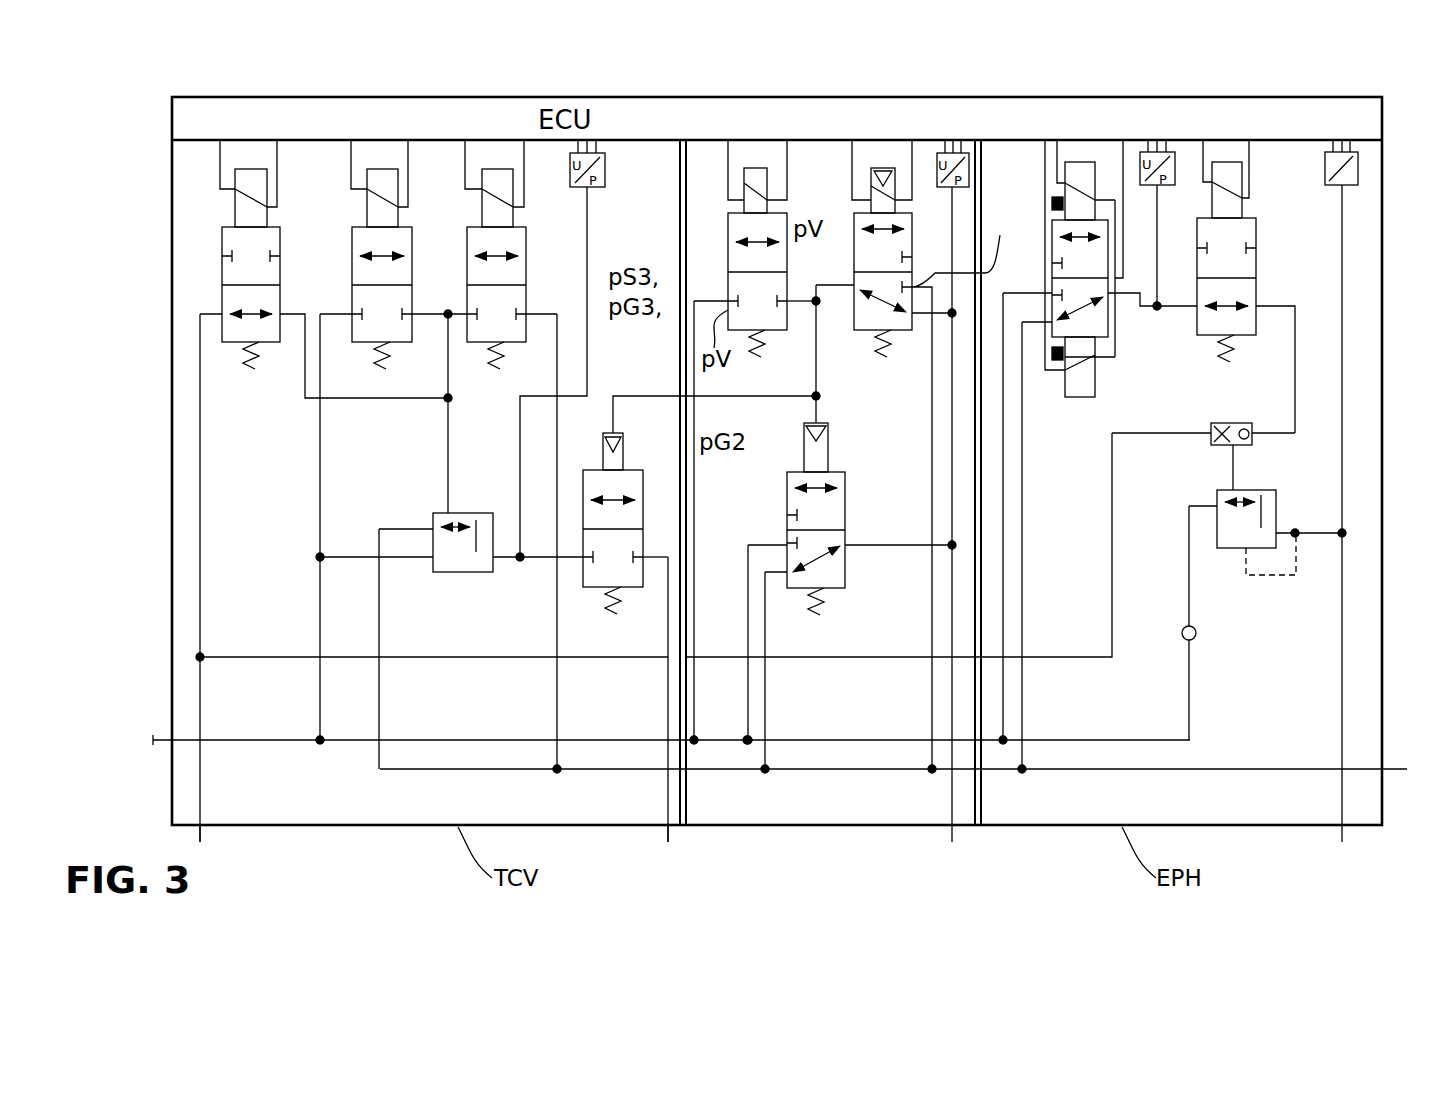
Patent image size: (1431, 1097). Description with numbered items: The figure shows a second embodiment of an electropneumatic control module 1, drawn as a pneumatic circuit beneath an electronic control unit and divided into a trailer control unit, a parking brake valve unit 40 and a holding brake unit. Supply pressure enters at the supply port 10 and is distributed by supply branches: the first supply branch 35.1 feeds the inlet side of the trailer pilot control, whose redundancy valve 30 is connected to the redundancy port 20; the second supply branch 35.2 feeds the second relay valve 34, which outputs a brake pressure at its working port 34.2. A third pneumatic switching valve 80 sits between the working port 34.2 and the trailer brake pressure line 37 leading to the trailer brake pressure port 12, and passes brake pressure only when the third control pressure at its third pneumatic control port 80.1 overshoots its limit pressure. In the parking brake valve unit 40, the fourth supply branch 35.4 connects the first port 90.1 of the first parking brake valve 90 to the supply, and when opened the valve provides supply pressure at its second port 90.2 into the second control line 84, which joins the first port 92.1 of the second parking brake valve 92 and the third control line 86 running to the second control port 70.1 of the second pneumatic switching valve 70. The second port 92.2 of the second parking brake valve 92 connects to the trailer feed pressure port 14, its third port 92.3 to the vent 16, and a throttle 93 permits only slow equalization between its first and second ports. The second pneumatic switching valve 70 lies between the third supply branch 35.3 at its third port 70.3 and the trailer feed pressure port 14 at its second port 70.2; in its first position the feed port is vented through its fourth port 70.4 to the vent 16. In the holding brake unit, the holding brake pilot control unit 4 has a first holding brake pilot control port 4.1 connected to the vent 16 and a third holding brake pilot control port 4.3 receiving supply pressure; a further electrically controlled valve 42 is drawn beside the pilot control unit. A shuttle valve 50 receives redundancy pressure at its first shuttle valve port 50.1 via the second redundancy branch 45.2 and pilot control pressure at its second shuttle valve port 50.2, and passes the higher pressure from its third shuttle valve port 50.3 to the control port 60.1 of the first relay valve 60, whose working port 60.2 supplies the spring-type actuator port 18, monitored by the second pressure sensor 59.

The electropneumatic control module 1 is at (230, 84).
The parking brake valve unit 40 is at (828, 136).
The holding brake pilot control unit 4 is at (1189, 136).
The second pressure sensor 59 is at (1358, 164).
The redundancy valve 30 is at (221, 270).
The first supply branch 35.1 is at (319, 478).
The second relay valve 34 is at (472, 512).
The second supply branch 35.2 is at (408, 560).
The working port 34.2 is at (493, 560).
The third pneumatic switching valve 80 is at (622, 469).
The third pneumatic control port 80.1 is at (611, 430).
The first parking brake valve 90 is at (728, 262).
The first port 90.1 is at (727, 300).
The second port 90.2 is at (788, 300).
The second parking brake valve 92 is at (853, 240).
The throttle 93 is at (882, 298).
The second control line 84 is at (776, 395).
The third control line 86 is at (853, 289).
The first port 92.1 is at (862, 328).
The second port 92.2 is at (920, 328).
The third port 92.3 is at (975, 491).
The second pneumatic switching valve 70 is at (788, 508).
The second control port 70.1 is at (763, 436).
The second port 70.2 is at (845, 544).
The third port 70.3 is at (787, 545).
The fourth port 70.4 is at (787, 577).
The third supply branch 35.3 is at (748, 602).
The fourth supply branch 35.4 is at (694, 712).
The trailer brake pressure line 37 is at (667, 718).
The solenoid valve 42 is at (1257, 306).
The third holding brake pilot control port 4.3 is at (1048, 292).
The first holding brake pilot control port 4.1 is at (1040, 323).
The shuttle valve 50 is at (1222, 430).
The first shuttle valve port 50.1 is at (1211, 432).
The second shuttle valve port 50.2 is at (1252, 434).
The third shuttle valve port 50.3 is at (1236, 446).
The first relay valve 60 is at (1231, 597).
The control port 60.1 is at (1233, 490).
The working port 60.2 is at (1276, 533).
The second redundancy branch 45.2 is at (1057, 660).
The supply port 10 is at (655, 728).
The redundancy port 20 is at (197, 848).
The trailer brake pressure port 12 is at (689, 848).
The trailer feed pressure port 14 is at (972, 529).
The spring-type actuator port 18 is at (1340, 528).
The vent 16 is at (905, 786).